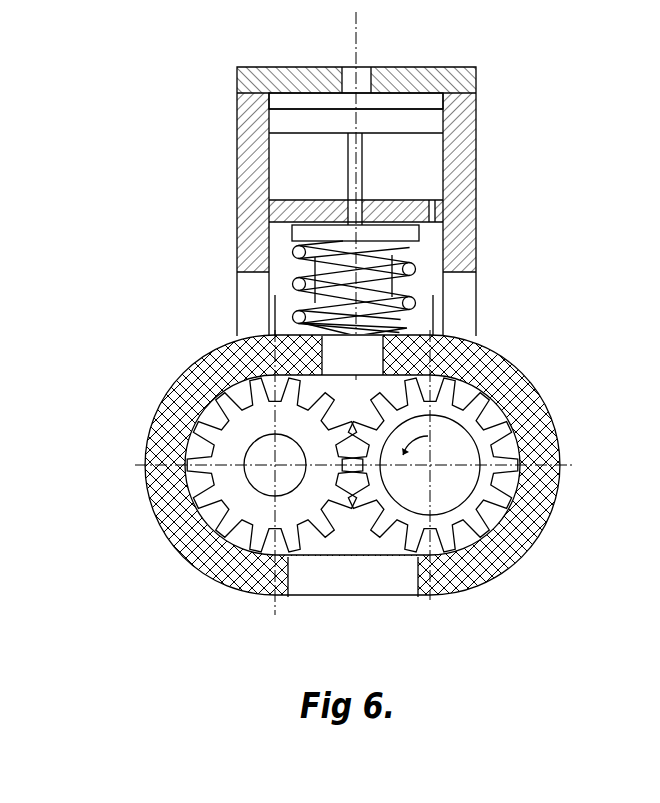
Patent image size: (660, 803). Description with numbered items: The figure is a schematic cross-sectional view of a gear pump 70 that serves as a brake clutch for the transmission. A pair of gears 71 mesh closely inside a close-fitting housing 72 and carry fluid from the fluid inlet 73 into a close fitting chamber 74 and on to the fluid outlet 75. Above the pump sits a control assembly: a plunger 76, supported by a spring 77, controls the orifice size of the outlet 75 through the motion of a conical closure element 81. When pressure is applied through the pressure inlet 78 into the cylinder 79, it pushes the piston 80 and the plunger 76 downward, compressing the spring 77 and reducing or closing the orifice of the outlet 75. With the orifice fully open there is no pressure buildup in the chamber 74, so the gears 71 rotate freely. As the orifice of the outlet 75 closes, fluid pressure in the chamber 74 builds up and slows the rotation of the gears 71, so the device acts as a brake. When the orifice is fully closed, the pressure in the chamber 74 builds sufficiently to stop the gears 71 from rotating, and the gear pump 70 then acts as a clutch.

The gear pump 70 is at (369, 176).
The gears 71 is at (225, 452).
The housing 72 is at (190, 385).
The fluid inlet 73 is at (360, 576).
The close fitting chamber 74 is at (347, 392).
The fluid outlet 75 is at (368, 353).
The plunger 76 is at (378, 233).
The spring 77 is at (409, 270).
The pressure inlet 78 is at (363, 80).
The cylinder 79 is at (403, 101).
The piston 80 is at (423, 124).
The conical closure element 81 is at (360, 323).